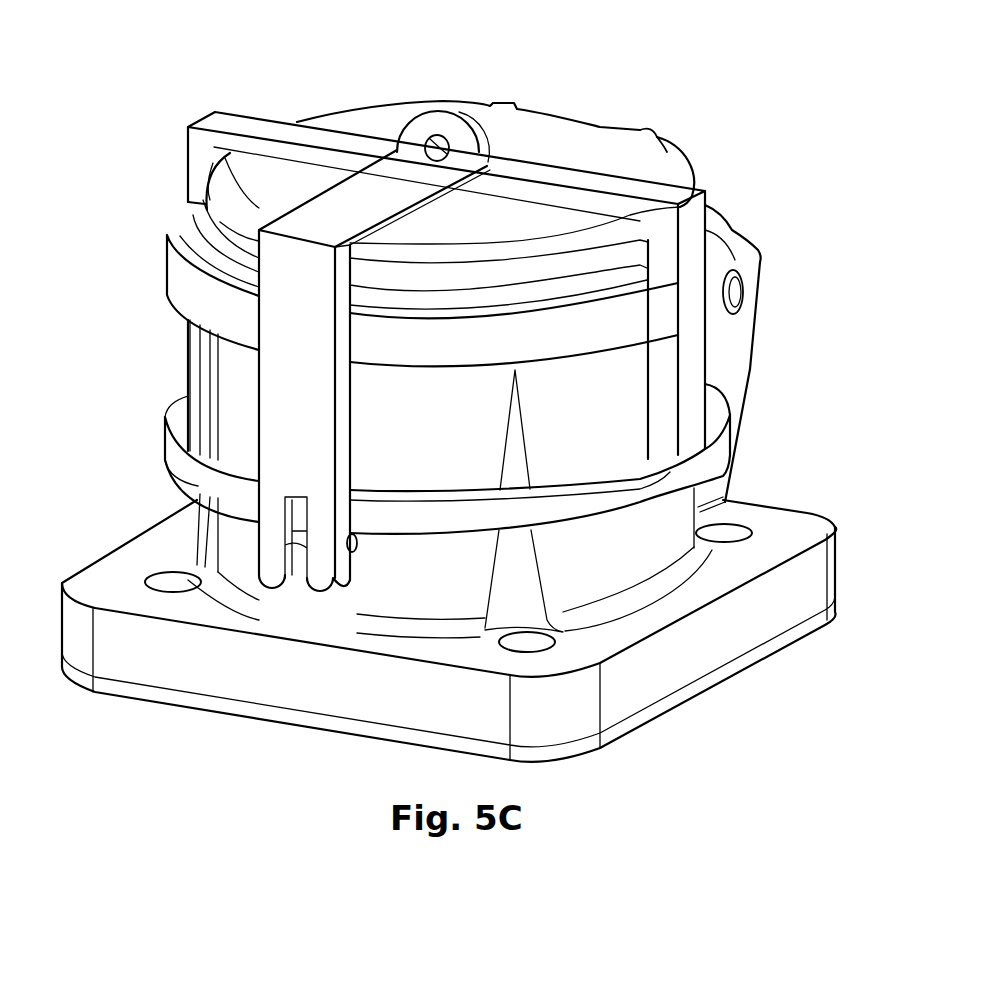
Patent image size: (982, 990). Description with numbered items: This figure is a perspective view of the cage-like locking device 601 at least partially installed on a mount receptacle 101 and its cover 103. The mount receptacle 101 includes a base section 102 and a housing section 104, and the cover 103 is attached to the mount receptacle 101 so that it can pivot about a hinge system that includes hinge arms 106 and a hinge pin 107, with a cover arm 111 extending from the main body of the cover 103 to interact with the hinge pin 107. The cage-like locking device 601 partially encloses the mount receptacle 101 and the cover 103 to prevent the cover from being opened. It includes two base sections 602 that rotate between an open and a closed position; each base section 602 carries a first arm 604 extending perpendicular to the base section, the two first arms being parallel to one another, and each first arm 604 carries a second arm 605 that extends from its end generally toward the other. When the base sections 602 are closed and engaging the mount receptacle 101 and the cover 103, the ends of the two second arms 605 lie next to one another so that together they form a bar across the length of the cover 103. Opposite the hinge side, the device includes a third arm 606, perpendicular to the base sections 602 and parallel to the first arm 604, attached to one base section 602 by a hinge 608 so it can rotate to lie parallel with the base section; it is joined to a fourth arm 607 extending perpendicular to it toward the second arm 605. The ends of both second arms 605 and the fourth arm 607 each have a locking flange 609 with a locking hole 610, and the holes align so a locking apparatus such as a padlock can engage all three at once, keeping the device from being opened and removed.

The mount receptacle 101 is at (747, 458).
The base section 102 is at (790, 520).
The cover 103 is at (611, 148).
The housing section 104 is at (630, 570).
The hinge arms 106 is at (743, 245).
The hinge pin 107 is at (738, 292).
The cover arm 111 is at (656, 145).
The cage-like locking device 601 is at (128, 413).
The base sections 602 is at (178, 465).
The first arm 604 is at (195, 173).
The second arm 605 is at (355, 135).
The third arm 606 is at (298, 305).
The fourth arm 607 is at (315, 218).
The hinge 608 is at (355, 538).
The locking flange 609 is at (453, 120).
The locking hole 610 is at (430, 147).